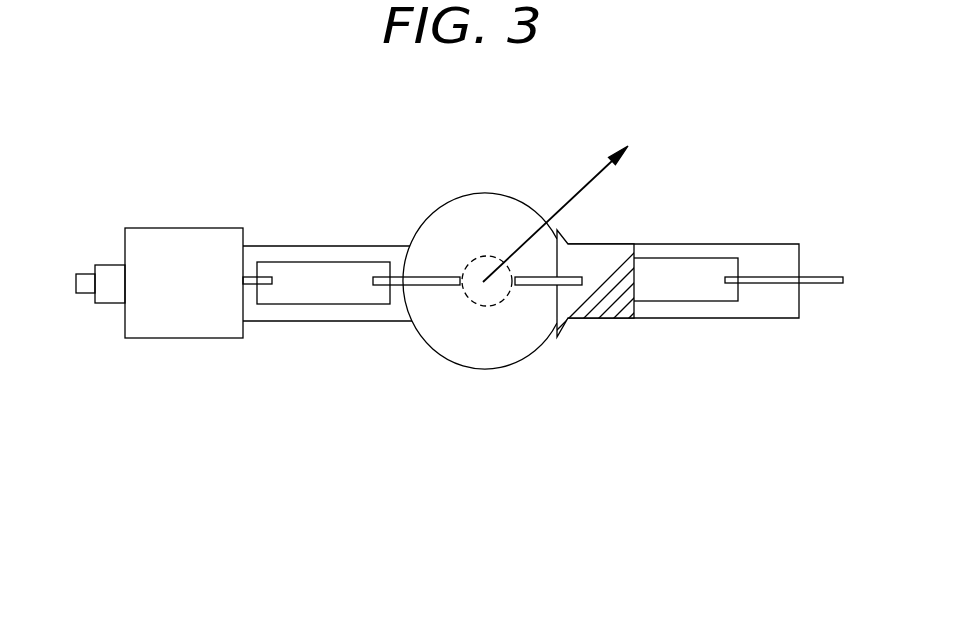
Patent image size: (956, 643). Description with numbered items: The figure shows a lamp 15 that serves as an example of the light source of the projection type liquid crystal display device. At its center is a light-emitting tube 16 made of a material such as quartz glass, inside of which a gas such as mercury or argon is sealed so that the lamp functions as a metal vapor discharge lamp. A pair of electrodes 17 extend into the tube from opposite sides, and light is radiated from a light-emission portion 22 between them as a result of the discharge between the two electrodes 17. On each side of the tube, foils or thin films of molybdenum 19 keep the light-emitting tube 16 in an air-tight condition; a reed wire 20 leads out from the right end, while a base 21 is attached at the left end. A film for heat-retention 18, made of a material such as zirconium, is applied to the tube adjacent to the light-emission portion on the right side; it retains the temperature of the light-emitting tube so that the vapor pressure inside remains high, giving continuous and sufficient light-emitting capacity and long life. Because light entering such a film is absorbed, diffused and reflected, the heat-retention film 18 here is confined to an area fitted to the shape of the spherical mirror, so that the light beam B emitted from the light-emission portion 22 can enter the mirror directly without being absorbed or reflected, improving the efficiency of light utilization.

The lamp 15 is at (296, 246).
The light-emitting tube 16 is at (479, 368).
The electrodes 17 is at (440, 277).
The film for heat-retention 18 is at (603, 318).
The foils of molybdenum 19 is at (320, 297).
The reed wire 20 is at (822, 285).
The base 21 is at (178, 228).
The light-emission portion 22 is at (487, 257).
The light beam B is at (584, 185).